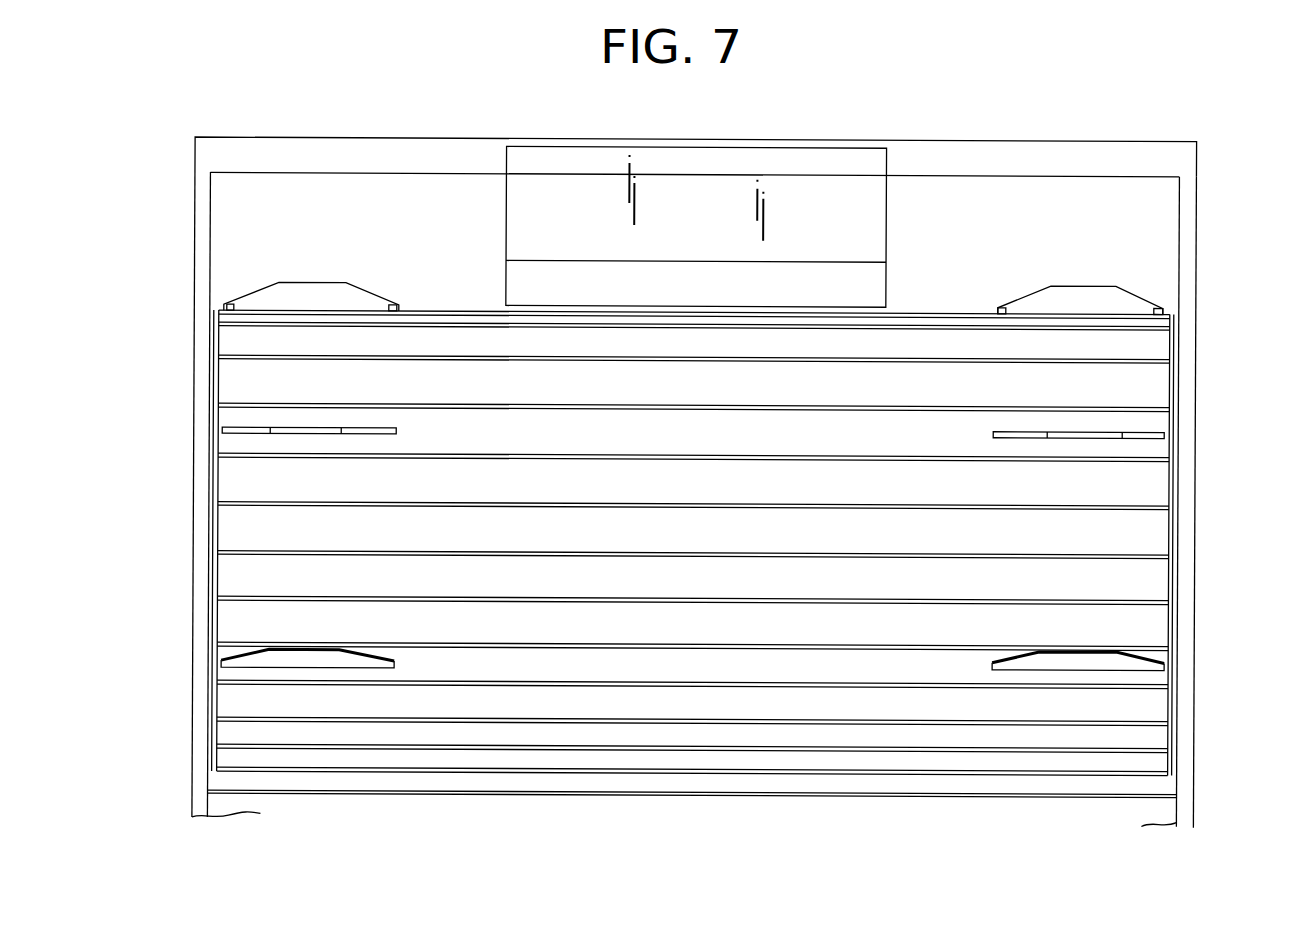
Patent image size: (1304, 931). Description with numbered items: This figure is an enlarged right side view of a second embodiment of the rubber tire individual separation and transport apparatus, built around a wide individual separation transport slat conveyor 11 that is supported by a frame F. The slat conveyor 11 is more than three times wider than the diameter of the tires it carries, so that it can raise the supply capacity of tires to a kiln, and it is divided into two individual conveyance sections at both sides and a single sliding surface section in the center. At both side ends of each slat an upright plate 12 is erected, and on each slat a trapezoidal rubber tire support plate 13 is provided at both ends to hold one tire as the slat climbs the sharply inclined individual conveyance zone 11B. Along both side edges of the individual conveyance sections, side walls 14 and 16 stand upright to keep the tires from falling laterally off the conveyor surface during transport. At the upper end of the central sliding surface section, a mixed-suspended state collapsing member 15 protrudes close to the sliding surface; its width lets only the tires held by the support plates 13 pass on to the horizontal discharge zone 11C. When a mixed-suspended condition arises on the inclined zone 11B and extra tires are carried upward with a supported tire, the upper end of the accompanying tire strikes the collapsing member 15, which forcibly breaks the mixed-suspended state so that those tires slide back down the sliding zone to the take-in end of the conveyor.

The frame F is at (413, 150).
The individual separation transport slat conveyor 11 is at (1205, 446).
The sharply inclined individual conveyance zone 11B is at (227, 530).
The horizontal discharge zone 11C is at (432, 310).
The upright plate 12 is at (215, 484).
The rubber tire support plate 13 is at (308, 286).
The side wall 14 is at (195, 644).
The mixed-suspended state collapsing member 15 is at (878, 229).
The side wall 16 is at (1190, 643).